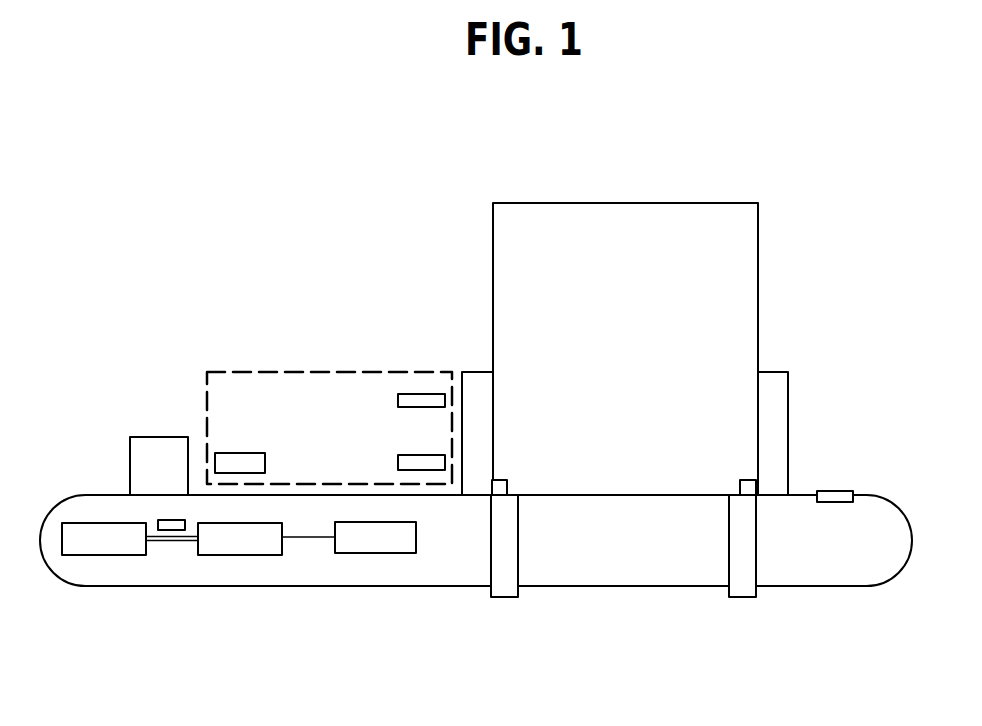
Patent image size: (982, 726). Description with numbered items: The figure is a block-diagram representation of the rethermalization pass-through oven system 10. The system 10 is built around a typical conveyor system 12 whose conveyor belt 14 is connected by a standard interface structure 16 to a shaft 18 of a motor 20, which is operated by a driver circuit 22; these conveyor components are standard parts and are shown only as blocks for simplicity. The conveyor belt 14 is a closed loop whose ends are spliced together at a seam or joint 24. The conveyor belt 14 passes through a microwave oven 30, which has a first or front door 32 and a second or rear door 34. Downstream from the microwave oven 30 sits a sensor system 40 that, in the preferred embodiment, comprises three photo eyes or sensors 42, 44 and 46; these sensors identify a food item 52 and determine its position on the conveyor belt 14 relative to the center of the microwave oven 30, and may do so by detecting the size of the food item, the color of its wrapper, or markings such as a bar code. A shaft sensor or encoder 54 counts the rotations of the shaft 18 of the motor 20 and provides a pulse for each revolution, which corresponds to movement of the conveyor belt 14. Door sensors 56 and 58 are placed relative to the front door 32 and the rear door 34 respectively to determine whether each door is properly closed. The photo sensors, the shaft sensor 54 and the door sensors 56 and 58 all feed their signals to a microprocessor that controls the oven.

The rethermalization pass-through oven system 10 is at (229, 236).
The conveyor system 12 is at (258, 590).
The conveyor belt 14 is at (816, 588).
The interface structure 16 is at (110, 548).
The shaft 18 is at (178, 543).
The motor 20 is at (257, 557).
The driver circuit 22 is at (390, 548).
The seam or joint 24 is at (825, 491).
The microwave oven 30 is at (709, 203).
The front door 32 is at (470, 372).
The rear door 34 is at (788, 372).
The sensor system 40 is at (293, 372).
The photo eye or sensor 42 is at (235, 453).
The photo eye or sensor 44 is at (413, 394).
The photo eye or sensor 46 is at (418, 455).
The food item 52 is at (158, 437).
The shaft sensor or encoder 54 is at (158, 520).
The door sensor 56 is at (508, 484).
The door sensor 58 is at (743, 483).